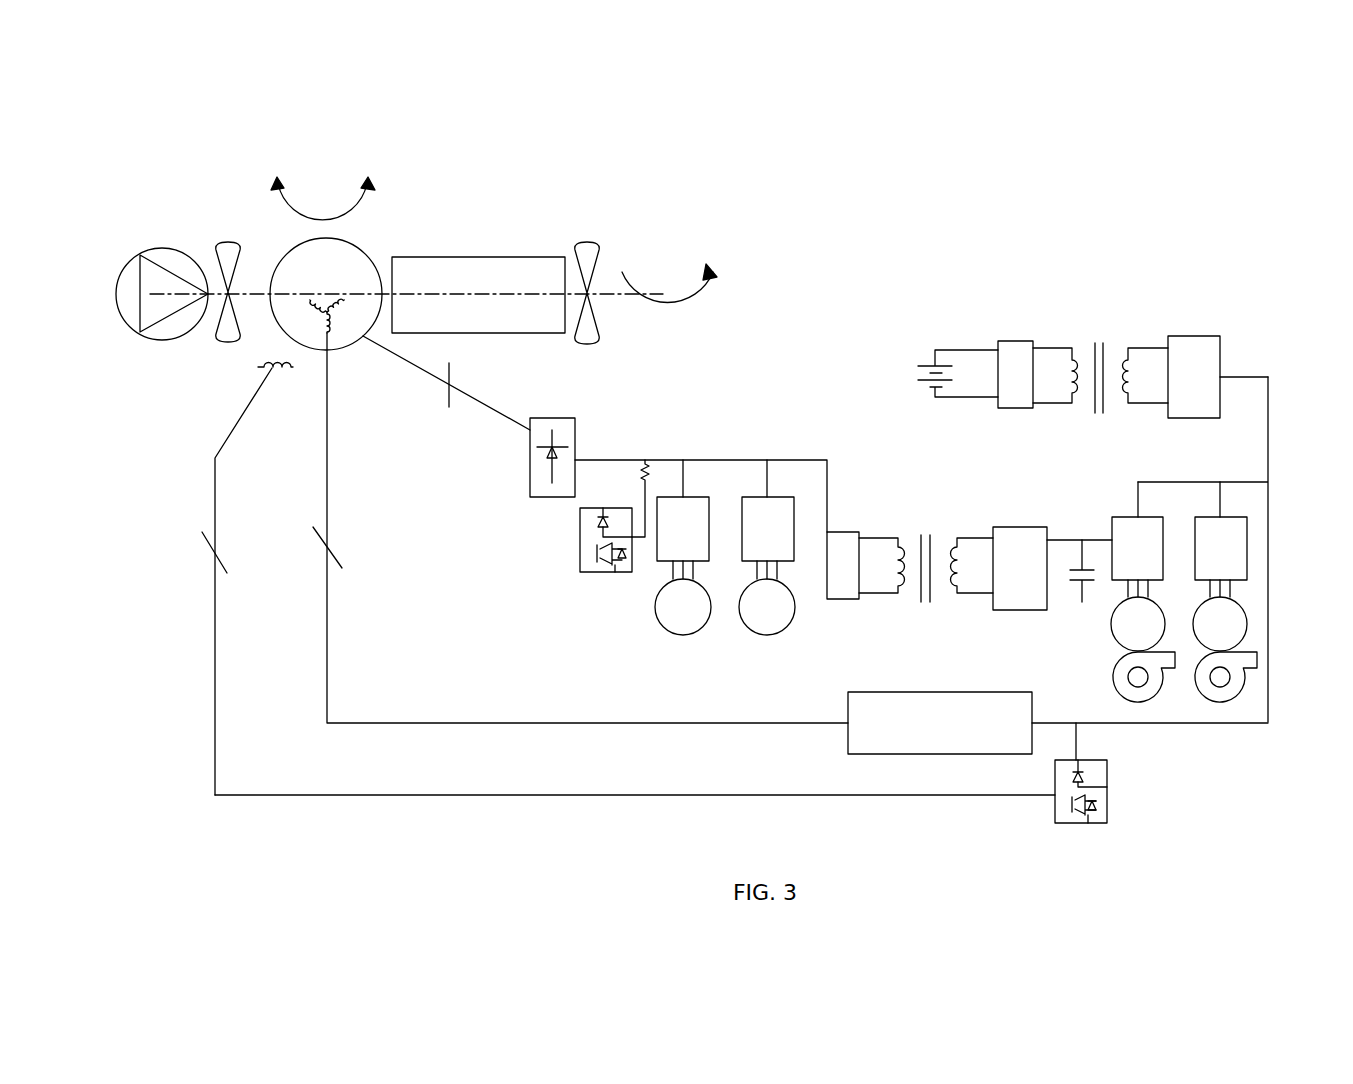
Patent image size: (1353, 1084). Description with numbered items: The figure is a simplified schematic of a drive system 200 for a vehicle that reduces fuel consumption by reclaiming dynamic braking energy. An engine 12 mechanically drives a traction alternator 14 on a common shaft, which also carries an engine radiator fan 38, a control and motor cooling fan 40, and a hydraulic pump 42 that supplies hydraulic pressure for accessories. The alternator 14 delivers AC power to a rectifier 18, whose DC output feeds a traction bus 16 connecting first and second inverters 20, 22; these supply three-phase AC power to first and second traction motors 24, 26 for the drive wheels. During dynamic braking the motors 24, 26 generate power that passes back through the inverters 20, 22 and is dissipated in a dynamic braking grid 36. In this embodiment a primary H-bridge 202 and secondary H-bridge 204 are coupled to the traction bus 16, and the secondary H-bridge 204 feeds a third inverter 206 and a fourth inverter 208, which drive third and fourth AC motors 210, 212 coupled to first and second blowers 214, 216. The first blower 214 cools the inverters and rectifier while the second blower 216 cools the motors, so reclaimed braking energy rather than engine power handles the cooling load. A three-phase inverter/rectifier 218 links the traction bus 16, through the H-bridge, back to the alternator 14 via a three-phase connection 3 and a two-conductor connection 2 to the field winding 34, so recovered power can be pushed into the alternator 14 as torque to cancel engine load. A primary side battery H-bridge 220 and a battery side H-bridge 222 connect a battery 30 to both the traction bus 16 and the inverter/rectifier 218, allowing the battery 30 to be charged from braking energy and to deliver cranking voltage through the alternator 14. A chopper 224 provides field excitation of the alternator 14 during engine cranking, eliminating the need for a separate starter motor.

The drive system 200 is at (718, 153).
The two-conductor line 2 is at (223, 561).
The three-phase line 3 is at (381, 474).
The engine 12 is at (522, 256).
The traction alternator 14 is at (287, 247).
The traction bus 16 is at (667, 430).
The rectifier 18 is at (575, 422).
The first inverter 20 is at (695, 483).
The second inverter 22 is at (780, 483).
The first traction motor 24 is at (688, 633).
The second traction motor 26 is at (782, 633).
The battery 30 is at (942, 335).
The field winding 34 is at (199, 494).
The dynamic braking grid 36 is at (622, 590).
The engine radiator fan 38 is at (584, 242).
The cooling fan 40 is at (217, 240).
The hydraulic pump 42 is at (120, 293).
The primary H-bridge 202 is at (873, 522).
The secondary H-bridge 204 is at (1018, 508).
The third inverter 206 is at (1122, 517).
The fourth inverter 208 is at (1247, 540).
The third AC motor 210 is at (1112, 624).
The fourth AC motor 212 is at (1247, 622).
The first blower 214 is at (1114, 680).
The second blower 216 is at (1240, 680).
The three-phase inverter/rectifier 218 is at (973, 692).
The primary side battery H-bridge 220 is at (1152, 320).
The battery side H-bridge 222 is at (1048, 325).
The chopper 224 is at (1107, 770).